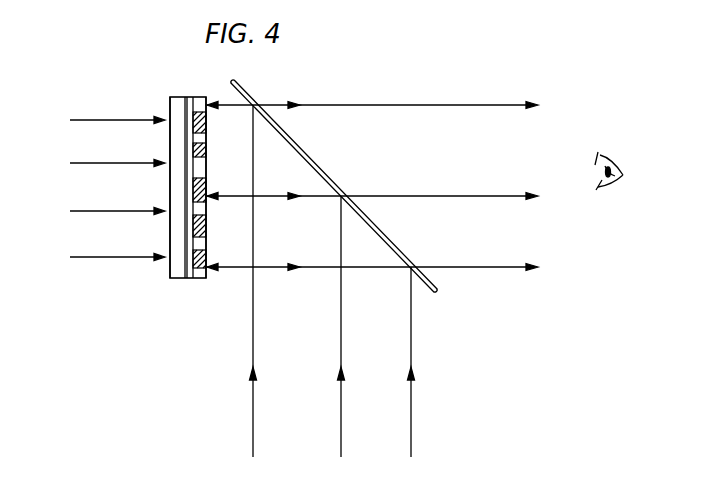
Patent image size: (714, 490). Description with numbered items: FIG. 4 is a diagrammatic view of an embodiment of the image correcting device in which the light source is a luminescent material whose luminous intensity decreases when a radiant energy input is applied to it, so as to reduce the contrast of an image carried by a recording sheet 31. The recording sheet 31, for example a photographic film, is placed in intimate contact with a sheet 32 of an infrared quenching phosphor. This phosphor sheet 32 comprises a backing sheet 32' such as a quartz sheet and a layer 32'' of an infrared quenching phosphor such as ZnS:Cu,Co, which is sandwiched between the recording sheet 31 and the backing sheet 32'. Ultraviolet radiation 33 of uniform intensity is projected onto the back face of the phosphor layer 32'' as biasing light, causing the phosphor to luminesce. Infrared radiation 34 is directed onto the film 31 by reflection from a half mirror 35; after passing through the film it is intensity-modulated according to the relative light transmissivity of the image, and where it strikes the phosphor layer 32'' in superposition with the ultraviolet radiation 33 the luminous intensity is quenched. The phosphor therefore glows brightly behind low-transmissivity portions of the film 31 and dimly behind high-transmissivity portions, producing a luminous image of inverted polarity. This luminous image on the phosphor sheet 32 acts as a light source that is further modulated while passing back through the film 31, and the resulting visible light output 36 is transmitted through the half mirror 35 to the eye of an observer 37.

The recording sheet 31 is at (208, 279).
The sheet of infrared quenching phosphor 32 is at (172, 200).
The backing sheet 32' is at (157, 200).
The layer of infrared quenching phosphor 32'' is at (183, 208).
The ultraviolet radiation 33 is at (88, 258).
The infrared radiation 34 is at (253, 402).
The half mirror 35 is at (437, 292).
The visible light output 36 is at (308, 270).
The observer 37 is at (613, 186).